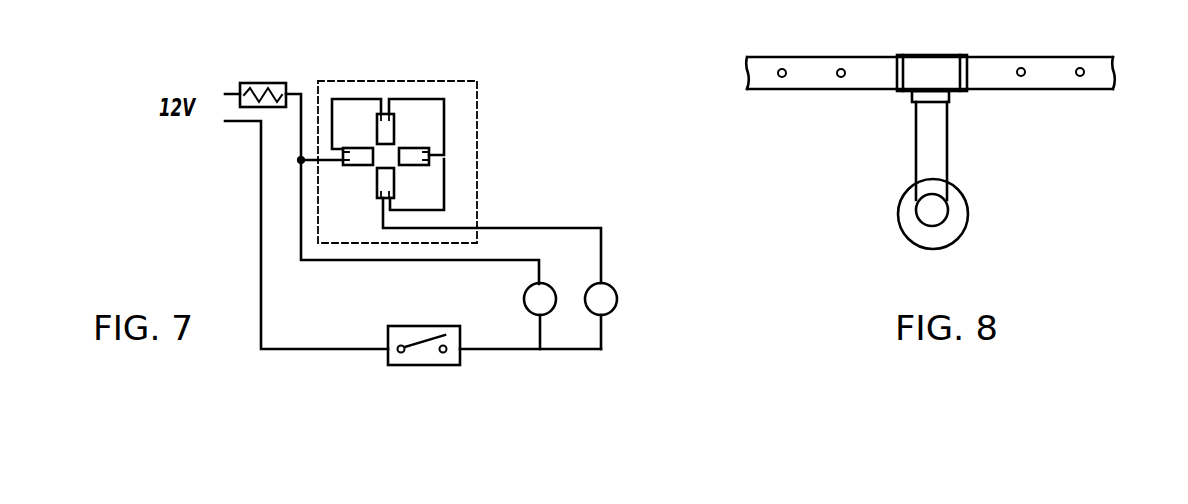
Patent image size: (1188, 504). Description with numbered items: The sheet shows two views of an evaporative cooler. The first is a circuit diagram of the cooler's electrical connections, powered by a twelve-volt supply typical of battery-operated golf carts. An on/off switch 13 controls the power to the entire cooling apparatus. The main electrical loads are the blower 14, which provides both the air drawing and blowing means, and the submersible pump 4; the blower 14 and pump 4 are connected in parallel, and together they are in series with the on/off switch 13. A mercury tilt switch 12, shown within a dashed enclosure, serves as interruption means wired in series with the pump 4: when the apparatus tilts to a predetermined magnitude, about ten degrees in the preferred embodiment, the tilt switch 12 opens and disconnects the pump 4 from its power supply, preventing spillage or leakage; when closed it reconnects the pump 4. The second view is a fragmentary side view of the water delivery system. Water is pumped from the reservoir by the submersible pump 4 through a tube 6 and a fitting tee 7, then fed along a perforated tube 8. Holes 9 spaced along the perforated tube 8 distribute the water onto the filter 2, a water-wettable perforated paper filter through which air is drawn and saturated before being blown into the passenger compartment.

In FIG. 7, the filter 2 is at (613, 310).
In FIG. 7, the mercury tilt switch 12 is at (397, 80).
In FIG. 7, the on/off switch 13 is at (407, 365).
In FIG. 7, the blower 14 is at (548, 312).
In FIG. 8, the submersible pump 4 is at (967, 218).
In FIG. 8, the tube 6 is at (948, 130).
In FIG. 8, the fitting tee 7 is at (939, 61).
In FIG. 8, the perforated tube 8 is at (1050, 57).
In FIG. 8, the holes 9 is at (1024, 76).